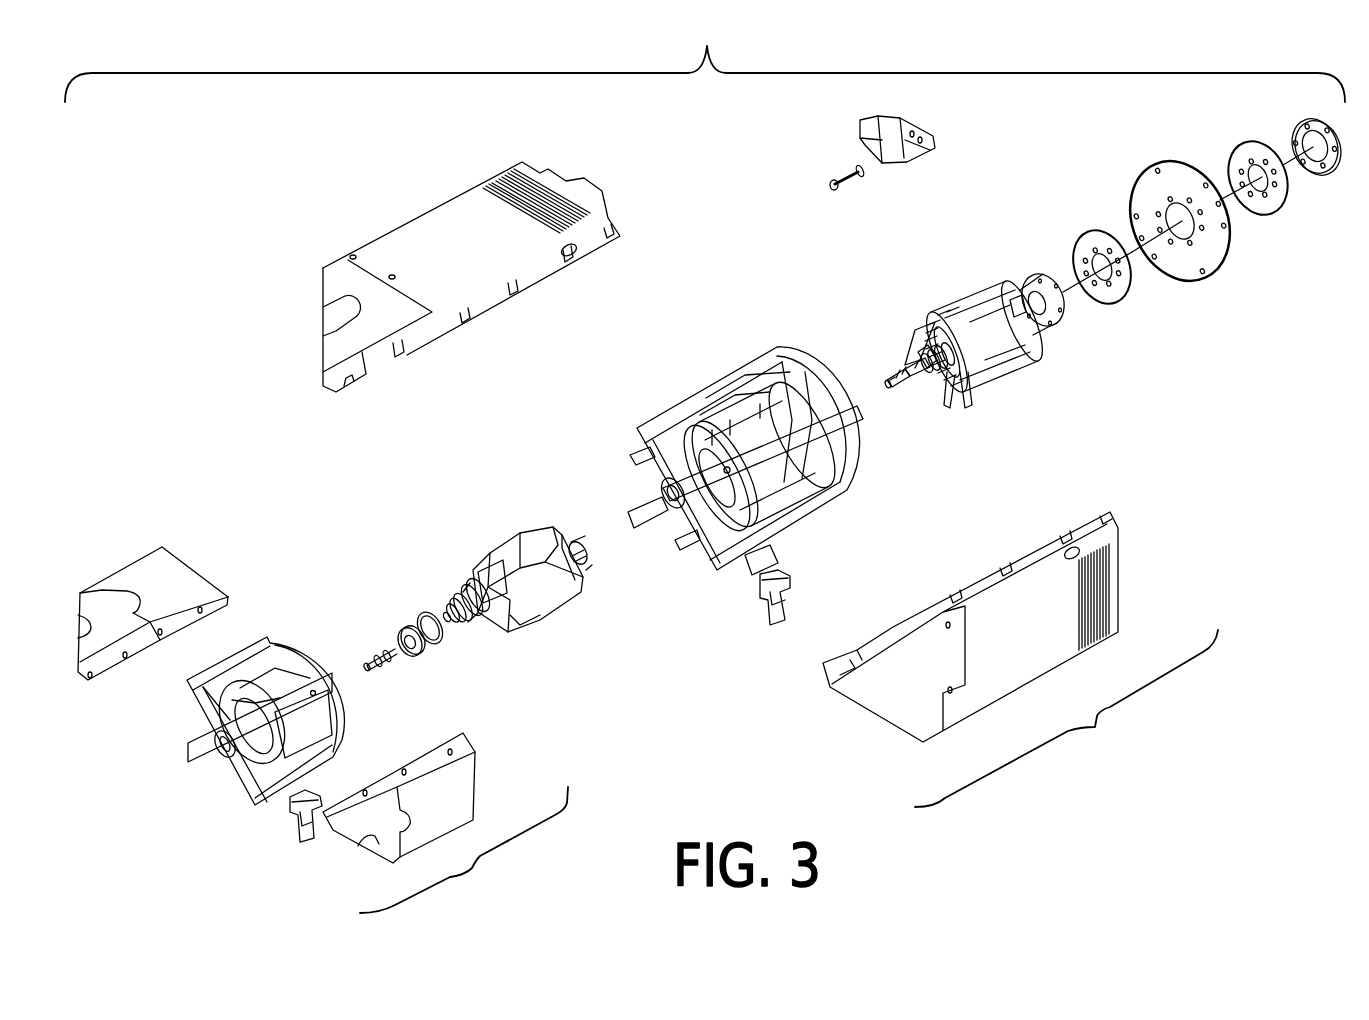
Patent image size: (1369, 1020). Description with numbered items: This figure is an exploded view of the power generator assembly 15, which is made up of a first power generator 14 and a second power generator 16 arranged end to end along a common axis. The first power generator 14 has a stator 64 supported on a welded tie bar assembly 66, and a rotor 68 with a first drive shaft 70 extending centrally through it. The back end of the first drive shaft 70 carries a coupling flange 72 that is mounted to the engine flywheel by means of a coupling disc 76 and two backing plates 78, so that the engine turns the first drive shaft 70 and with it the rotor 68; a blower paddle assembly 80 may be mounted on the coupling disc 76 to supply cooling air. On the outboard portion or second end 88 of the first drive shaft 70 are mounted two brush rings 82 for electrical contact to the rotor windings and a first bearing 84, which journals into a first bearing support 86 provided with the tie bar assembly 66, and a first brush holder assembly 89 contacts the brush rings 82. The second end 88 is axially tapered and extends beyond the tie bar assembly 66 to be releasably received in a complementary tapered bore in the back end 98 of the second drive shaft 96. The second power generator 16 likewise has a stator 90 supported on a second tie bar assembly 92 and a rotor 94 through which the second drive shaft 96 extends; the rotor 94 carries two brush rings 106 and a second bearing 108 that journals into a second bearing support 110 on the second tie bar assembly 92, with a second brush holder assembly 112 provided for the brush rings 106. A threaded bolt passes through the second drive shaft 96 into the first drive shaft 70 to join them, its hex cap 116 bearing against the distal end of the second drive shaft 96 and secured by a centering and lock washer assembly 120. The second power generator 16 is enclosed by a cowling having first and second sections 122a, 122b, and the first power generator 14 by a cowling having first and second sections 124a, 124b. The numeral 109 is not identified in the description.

The power generator assembly 15 is at (705, 60).
The first power generator 14 is at (1066, 718).
The second power generator 16 is at (464, 850).
The second section of cowling 124b is at (386, 230).
The first section of cowling 124a is at (1140, 526).
The first section of cowling 122a is at (490, 780).
The second section of cowling 122b is at (160, 576).
The blower paddle assembly 80 is at (940, 125).
The rotor 68 is at (946, 333).
The coupling flange 72 is at (1044, 284).
The first drive shaft 70 is at (902, 347).
The backing plates 78 is at (1118, 300).
The coupling disc 76 is at (1212, 262).
The second end of first drive shaft 88 is at (890, 380).
The stator 64 is at (711, 458).
The tie bar assembly 66 is at (634, 424).
The first bearing 84 is at (922, 385).
The brush rings 82 is at (968, 406).
The first bearing support 86 is at (672, 500).
The rotor 94 is at (515, 556).
The bearing 109 is at (460, 578).
The back end of second drive shaft 98 is at (583, 538).
The second bearing 108 is at (406, 618).
The hex cap 116 is at (365, 656).
The second drive shaft 96 is at (462, 622).
The brush rings 106 is at (515, 624).
The centering and lock washer assembly 120 is at (416, 631).
The stator 90 is at (220, 706).
The second tie bar assembly 92 is at (180, 742).
The second bearing support 110 is at (215, 756).
The second brush holder assembly 112 is at (286, 833).
The first brush holder assembly 89 is at (758, 633).